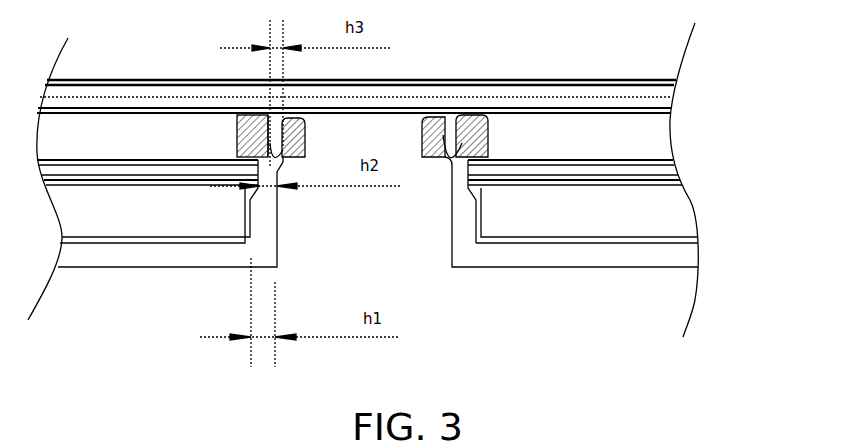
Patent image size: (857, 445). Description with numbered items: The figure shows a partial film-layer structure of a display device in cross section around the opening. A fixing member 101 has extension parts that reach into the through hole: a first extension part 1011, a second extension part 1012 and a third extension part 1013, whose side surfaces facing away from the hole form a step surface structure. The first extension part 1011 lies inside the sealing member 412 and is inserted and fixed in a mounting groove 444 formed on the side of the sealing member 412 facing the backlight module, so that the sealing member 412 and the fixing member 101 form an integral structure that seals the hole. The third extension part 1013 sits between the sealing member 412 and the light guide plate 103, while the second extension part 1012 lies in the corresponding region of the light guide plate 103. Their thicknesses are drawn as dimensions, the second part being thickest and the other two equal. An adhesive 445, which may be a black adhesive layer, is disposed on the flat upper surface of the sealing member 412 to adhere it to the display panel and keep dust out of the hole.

The fixing member 101 is at (678, 253).
The light guide plate 103 is at (645, 202).
The first extension part 1011 is at (458, 187).
The second extension part 1012 is at (467, 225).
The third extension part 1013 is at (446, 150).
The sealing member 412 is at (257, 147).
The mounting groove 444 is at (247, 138).
The adhesive 445 is at (280, 130).